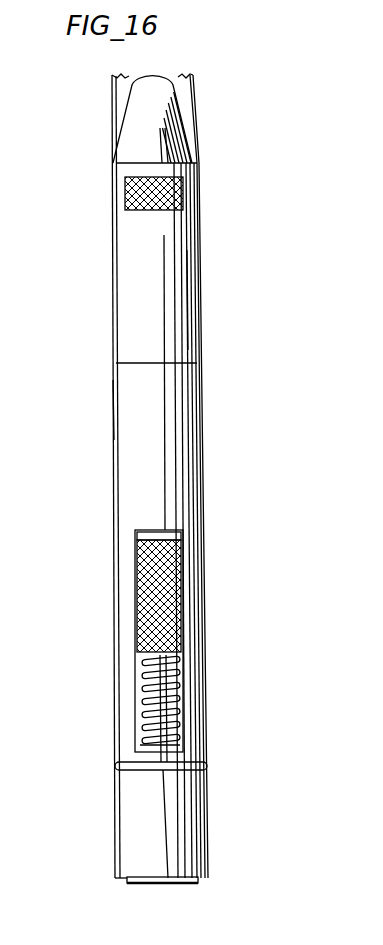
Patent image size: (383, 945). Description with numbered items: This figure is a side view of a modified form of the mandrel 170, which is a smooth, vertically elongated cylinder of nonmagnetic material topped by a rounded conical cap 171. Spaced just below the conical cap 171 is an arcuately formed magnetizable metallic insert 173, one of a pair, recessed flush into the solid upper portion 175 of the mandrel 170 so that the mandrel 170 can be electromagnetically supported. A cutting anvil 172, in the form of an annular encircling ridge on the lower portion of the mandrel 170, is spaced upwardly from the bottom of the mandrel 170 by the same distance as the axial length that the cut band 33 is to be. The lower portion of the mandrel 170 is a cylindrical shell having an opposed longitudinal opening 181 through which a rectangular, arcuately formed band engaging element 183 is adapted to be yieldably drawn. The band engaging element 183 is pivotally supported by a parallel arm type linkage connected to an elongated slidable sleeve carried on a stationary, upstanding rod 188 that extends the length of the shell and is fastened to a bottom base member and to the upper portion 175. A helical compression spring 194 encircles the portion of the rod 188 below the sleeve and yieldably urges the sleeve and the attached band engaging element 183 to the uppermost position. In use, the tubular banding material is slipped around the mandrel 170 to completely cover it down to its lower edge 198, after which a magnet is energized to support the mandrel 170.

The mandrel 170 is at (109, 313).
The rounded conical cap 171 is at (130, 129).
The magnetizable metallic insert 173 is at (130, 197).
The solid upper portion 175 is at (190, 311).
The casing wall 33 is at (113, 418).
The band engaging element 183 is at (150, 607).
The longitudinal opening 181 is at (140, 702).
The helical compression spring 194 is at (172, 707).
The upstanding rod 188 is at (140, 741).
The cutting anvil 172 is at (115, 766).
The lower edge 198 is at (127, 883).